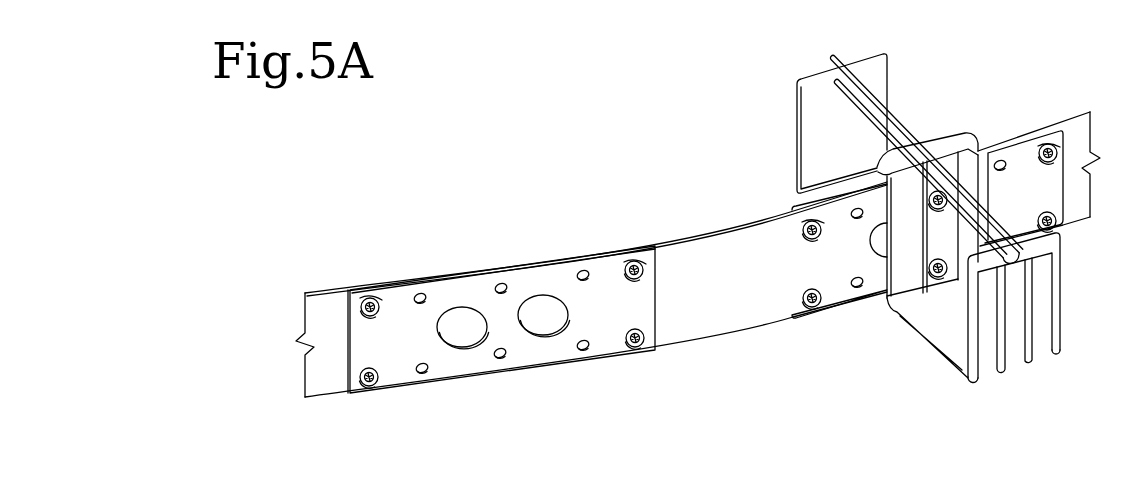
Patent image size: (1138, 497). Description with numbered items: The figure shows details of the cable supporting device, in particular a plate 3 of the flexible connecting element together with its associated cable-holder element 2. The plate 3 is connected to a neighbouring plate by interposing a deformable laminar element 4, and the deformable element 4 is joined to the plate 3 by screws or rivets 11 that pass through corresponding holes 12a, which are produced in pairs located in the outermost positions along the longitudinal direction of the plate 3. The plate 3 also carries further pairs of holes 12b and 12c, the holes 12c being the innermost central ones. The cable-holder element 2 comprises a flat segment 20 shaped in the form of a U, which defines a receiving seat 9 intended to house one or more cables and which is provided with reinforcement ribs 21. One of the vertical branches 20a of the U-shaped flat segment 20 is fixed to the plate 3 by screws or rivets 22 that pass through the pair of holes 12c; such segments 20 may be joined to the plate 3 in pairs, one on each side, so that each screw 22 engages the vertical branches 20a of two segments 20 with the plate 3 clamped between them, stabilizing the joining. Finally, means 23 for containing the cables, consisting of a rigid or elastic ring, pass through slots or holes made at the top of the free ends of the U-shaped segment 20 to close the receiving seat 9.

The cable-holder element 2 is at (933, 362).
The plate 3 is at (463, 291).
The deformable laminar element 4 is at (713, 258).
The receiving seat 9 is at (812, 139).
The screw 11 is at (364, 316).
The hole 12a is at (380, 290).
The hole 12b is at (419, 291).
The hole 12c is at (499, 281).
The U-shaped flat segment 20 is at (1063, 268).
The vertical branch 20a is at (972, 175).
The reinforcement rib 21 is at (1032, 358).
The screw 22 is at (935, 283).
The means for containing the cables 23 is at (903, 122).